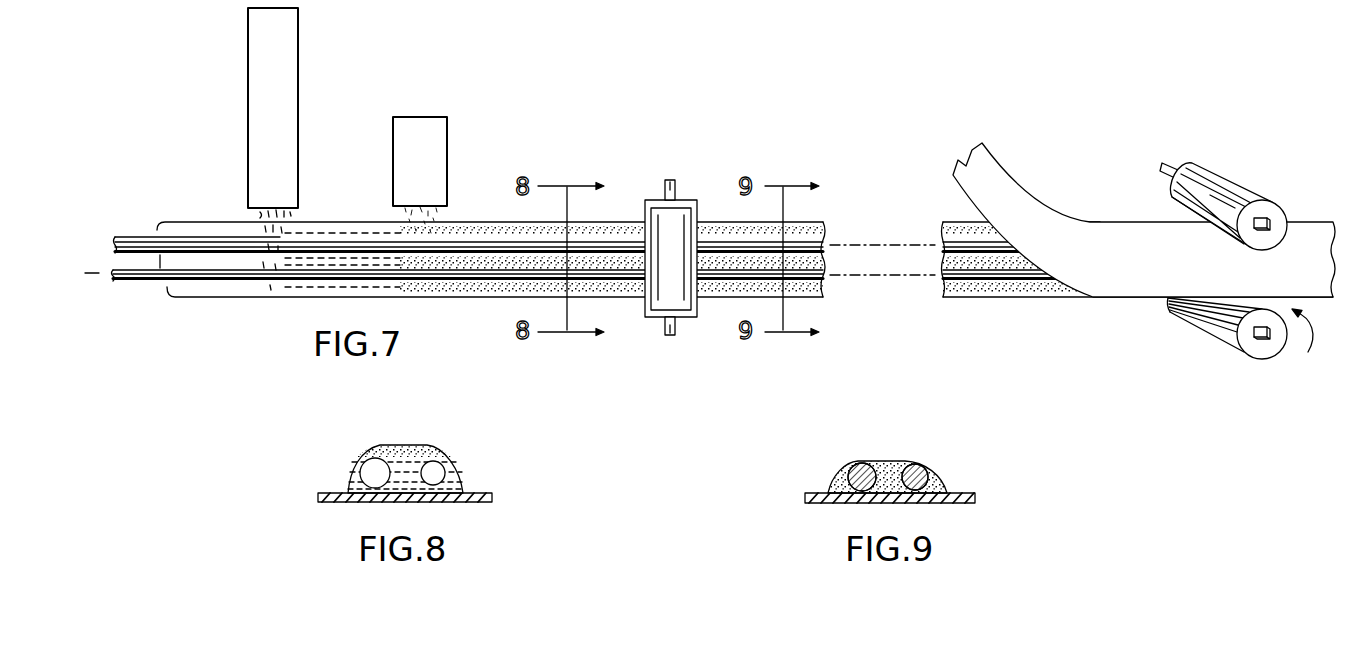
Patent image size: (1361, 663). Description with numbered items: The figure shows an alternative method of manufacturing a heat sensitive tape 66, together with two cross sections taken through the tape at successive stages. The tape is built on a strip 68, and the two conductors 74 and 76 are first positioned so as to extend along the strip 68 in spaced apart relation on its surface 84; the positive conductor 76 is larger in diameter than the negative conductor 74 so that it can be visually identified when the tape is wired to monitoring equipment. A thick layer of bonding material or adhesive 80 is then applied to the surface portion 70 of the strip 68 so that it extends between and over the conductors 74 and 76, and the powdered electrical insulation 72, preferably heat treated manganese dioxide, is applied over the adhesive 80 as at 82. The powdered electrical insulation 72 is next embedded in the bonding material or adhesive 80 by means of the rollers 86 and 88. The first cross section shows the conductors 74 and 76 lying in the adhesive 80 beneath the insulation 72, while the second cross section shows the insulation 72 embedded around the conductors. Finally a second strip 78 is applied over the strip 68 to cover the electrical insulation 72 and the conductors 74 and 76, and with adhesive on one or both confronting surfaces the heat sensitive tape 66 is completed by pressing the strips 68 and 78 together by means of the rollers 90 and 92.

In FIG. 7, the heat sensitive tape 66 is at (1314, 352).
In FIG. 7, the strip 68 is at (214, 287).
In FIG. 9, the strip 68 is at (922, 498).
In FIG. 7, the surface portion 70 is at (460, 258).
In FIG. 7, the electrical insulation 72 is at (398, 213).
In FIG. 8, the electrical insulation 72 is at (425, 448).
In FIG. 9, the electrical insulation 72 is at (895, 466).
In FIG. 7, the negative conductor 74 is at (135, 278).
In FIG. 8, the negative conductor 74 is at (440, 470).
In FIG. 9, the negative conductor 74 is at (925, 475).
In FIG. 7, the positive conductor 76 is at (132, 236).
In FIG. 8, the positive conductor 76 is at (360, 468).
In FIG. 9, the positive conductor 76 is at (858, 462).
In FIG. 7, the second strip 78 is at (1010, 190).
In FIG. 8, the second strip 78 is at (468, 498).
In FIG. 7, the bonding material or adhesive 80 is at (292, 43).
In FIG. 8, the bonding material or adhesive 80 is at (398, 468).
In FIG. 7, the application point of powdered insulation 82 is at (437, 143).
In FIG. 7, the surface 84 is at (205, 228).
In FIG. 7, the roller 86 is at (658, 298).
In FIG. 7, the roller 88 is at (688, 317).
In FIG. 7, the roller 90 is at (1236, 218).
In FIG. 7, the roller 92 is at (1222, 323).